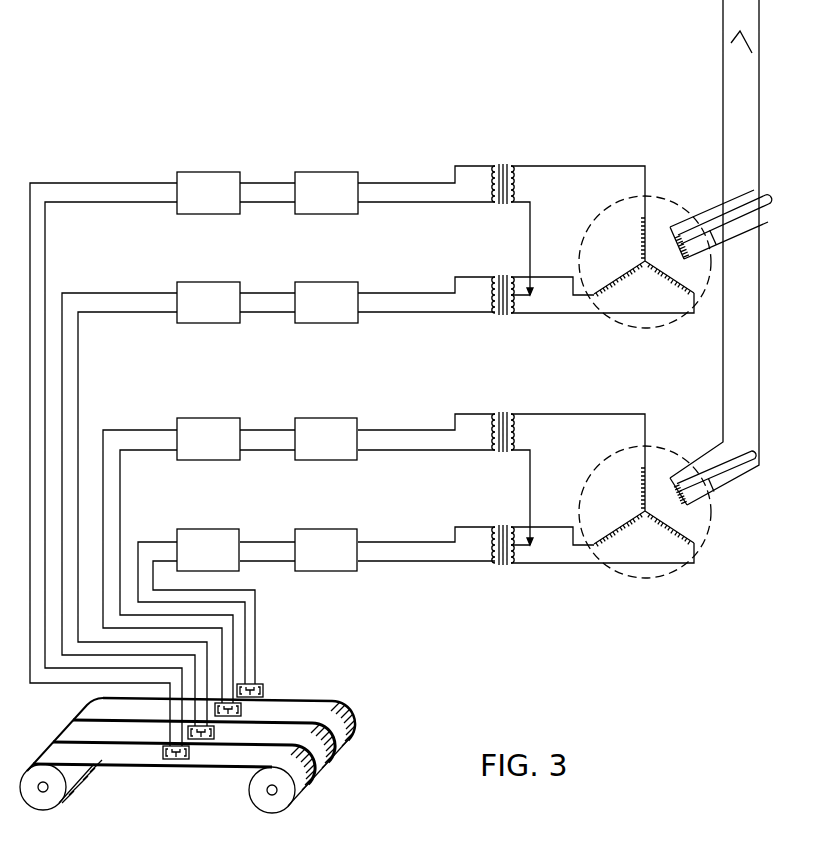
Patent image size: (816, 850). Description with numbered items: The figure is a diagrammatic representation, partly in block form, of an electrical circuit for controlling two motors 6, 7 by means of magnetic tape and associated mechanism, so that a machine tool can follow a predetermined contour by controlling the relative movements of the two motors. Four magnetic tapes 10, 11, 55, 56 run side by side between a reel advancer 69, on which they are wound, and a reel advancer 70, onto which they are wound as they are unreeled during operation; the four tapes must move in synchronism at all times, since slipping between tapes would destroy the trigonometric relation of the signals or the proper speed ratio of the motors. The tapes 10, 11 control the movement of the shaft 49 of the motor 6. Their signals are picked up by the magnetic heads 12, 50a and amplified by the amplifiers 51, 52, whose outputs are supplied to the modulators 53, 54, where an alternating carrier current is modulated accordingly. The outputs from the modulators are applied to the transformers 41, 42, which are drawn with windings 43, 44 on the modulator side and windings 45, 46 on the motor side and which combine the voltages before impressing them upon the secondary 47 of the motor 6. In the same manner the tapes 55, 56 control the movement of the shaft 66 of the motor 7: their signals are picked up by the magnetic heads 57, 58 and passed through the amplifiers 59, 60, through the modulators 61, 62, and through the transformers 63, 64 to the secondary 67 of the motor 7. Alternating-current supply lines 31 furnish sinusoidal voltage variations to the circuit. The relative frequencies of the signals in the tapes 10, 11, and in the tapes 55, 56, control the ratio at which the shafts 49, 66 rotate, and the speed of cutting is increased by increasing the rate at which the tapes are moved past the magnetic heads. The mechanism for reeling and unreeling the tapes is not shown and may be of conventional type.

The motor 6 is at (645, 251).
The motor 7 is at (645, 520).
The magnetic tape 10 is at (237, 765).
The magnetic tape 11 is at (257, 744).
The magnetic head 12 is at (190, 752).
The A. C. supply lines 31 is at (714, 252).
The transformer 41 is at (508, 171).
The transformer 42 is at (508, 307).
The primary winding 43 is at (489, 187).
The primary winding 44 is at (489, 297).
The secondary winding 45 is at (520, 193).
The secondary winding 46 is at (520, 303).
The secondary of the motor 47 is at (618, 287).
The shaft of the motor 49 is at (735, 201).
The magnetic head 50a is at (215, 732).
The amplifier 51 is at (201, 220).
The amplifier 52 is at (203, 330).
The modulator 53 is at (334, 222).
The modulator 54 is at (334, 330).
The magnetic tape 55 is at (288, 722).
The magnetic tape 56 is at (294, 700).
The magnetic head 57 is at (242, 710).
The magnetic head 58 is at (264, 685).
The amplifier 59 is at (202, 466).
The amplifier 60 is at (192, 576).
The modulator 61 is at (325, 470).
The modulator 62 is at (325, 580).
The transformer 63 is at (502, 412).
The transformer 64 is at (503, 568).
The shaft of the motor 66 is at (733, 457).
The secondary of the motor 67 is at (617, 533).
The reel advancer 69 is at (55, 806).
The reel advancer 70 is at (280, 812).